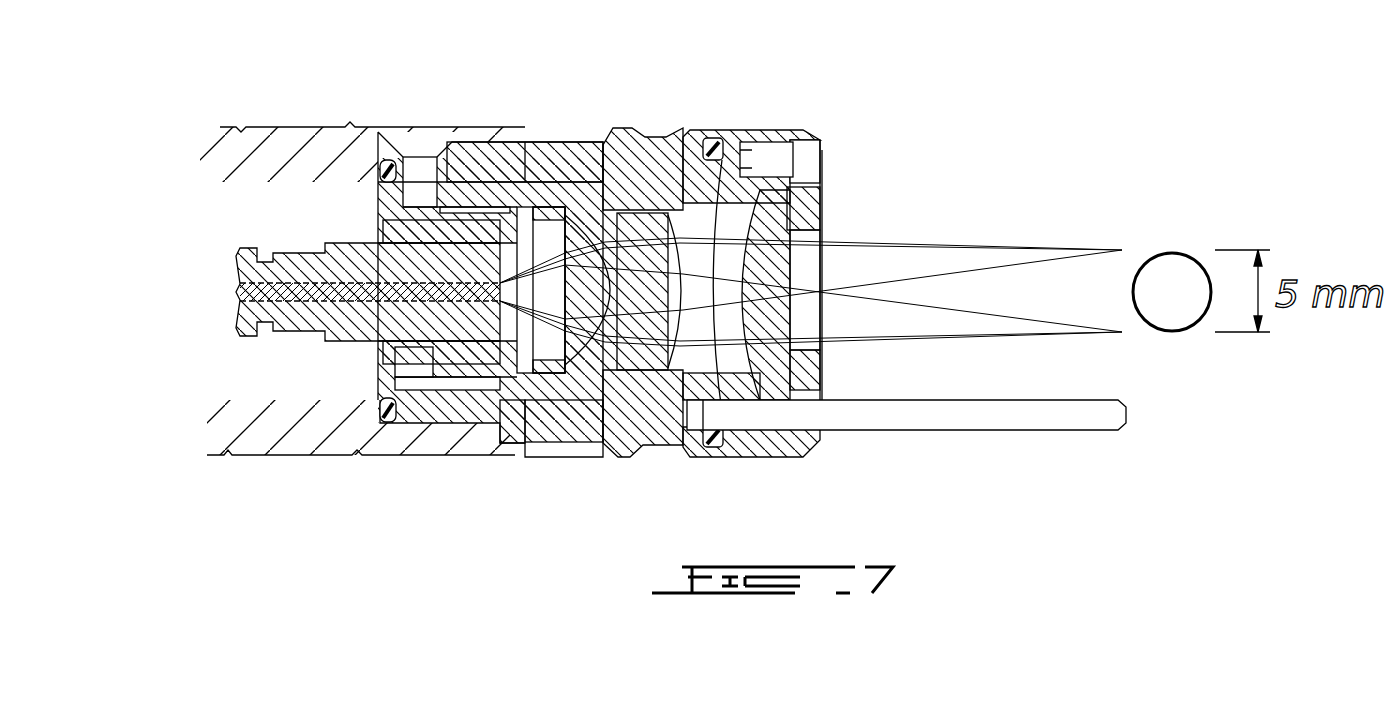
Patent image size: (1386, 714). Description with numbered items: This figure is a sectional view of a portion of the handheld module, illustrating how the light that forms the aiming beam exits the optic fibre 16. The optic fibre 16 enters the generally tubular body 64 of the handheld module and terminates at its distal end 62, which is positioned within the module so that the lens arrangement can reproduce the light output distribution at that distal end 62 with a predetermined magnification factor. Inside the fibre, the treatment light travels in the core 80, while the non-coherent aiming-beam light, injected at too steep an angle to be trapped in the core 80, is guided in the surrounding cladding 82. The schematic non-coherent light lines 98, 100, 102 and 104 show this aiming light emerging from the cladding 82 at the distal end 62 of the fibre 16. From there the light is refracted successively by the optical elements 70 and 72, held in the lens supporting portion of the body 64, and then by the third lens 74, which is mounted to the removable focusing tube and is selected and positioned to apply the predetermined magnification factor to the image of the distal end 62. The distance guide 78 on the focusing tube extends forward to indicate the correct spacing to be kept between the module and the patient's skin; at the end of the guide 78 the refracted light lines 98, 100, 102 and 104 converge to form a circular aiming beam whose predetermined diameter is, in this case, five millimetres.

The optic fibre 16 is at (225, 347).
The distal end 62 is at (513, 140).
The tubular body 64 is at (243, 457).
The optical element 70 is at (568, 243).
The optical element 72 is at (643, 227).
The third lens 74 is at (787, 177).
The distance guide 78 is at (967, 413).
The core 80 is at (288, 331).
The cladding 82 is at (317, 331).
The non-coherent light line 98 is at (553, 392).
The non-coherent light line 100 is at (715, 140).
The non-coherent light line 102 is at (720, 447).
The non-coherent light line 104 is at (900, 240).